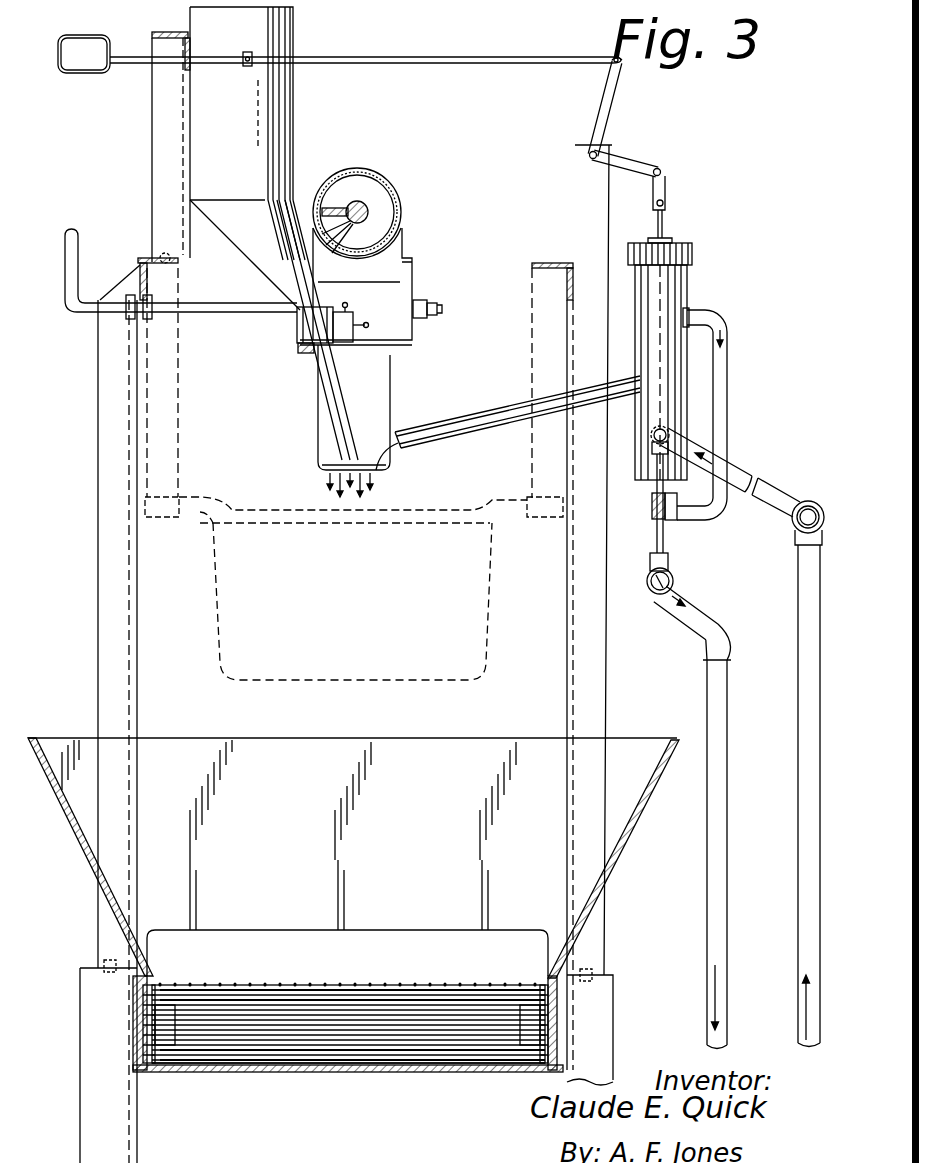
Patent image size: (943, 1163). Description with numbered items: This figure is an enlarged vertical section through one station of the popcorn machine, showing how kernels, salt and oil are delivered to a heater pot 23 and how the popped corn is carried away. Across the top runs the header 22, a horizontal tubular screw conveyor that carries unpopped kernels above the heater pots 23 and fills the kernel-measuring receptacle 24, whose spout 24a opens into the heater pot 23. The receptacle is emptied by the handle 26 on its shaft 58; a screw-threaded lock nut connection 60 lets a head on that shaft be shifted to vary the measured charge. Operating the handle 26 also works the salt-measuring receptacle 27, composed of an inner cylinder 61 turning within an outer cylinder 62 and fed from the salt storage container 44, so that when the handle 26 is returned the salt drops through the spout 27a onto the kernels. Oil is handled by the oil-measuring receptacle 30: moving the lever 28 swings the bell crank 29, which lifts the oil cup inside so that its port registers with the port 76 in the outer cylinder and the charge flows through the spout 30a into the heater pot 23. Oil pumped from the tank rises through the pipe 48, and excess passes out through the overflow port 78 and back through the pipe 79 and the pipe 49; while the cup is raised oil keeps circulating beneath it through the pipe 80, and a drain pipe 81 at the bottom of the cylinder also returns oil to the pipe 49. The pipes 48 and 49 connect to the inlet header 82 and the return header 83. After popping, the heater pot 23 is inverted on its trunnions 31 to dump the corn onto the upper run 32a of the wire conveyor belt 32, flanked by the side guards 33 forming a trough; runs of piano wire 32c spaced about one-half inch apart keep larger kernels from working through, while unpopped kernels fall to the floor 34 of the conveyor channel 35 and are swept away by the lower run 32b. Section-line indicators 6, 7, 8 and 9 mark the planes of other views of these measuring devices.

The section line 6- 6 is at (357, 228).
The section line 7- 7 is at (188, 16).
The section line 8- 8 is at (830, 165).
The section line 9- 9 is at (639, 231).
The header 22 is at (393, 183).
The heater pot 23 is at (470, 628).
The kernel-measuring receptacle 24 is at (415, 338).
The spout 24a is at (392, 392).
The handle 26 is at (77, 236).
The salt-measuring receptacle 27 is at (296, 328).
The spout 27a is at (338, 430).
The lever 28 is at (76, 74).
The bell crank 29 is at (597, 100).
The oil-measuring receptacle 30 is at (690, 297).
The spout 30a is at (490, 423).
The trunnions 31 is at (204, 497).
The wire conveyor belt 32 is at (335, 977).
The upper run 32a is at (238, 984).
The lower run 32b is at (282, 1072).
The piano wire runs 32c is at (458, 985).
The side guards 33 is at (72, 824).
The floor 34 is at (401, 1072).
The conveyor channel 35 is at (565, 1030).
The salt storage container 44 is at (294, 22).
The pipe 48 is at (803, 645).
The pipe 49 is at (727, 827).
The shaft 58 is at (249, 312).
The screw-threaded lock nut connection 60 is at (430, 299).
The inner cylinder 61 is at (352, 345).
The outer cylinder 62 is at (299, 354).
The port 76 is at (638, 380).
The overflow port 78 is at (701, 312).
The pipe 79 is at (728, 366).
The pipe 80 is at (665, 497).
The drain pipe 81 is at (655, 537).
The inlet header 82 is at (808, 503).
The return header 83 is at (650, 594).